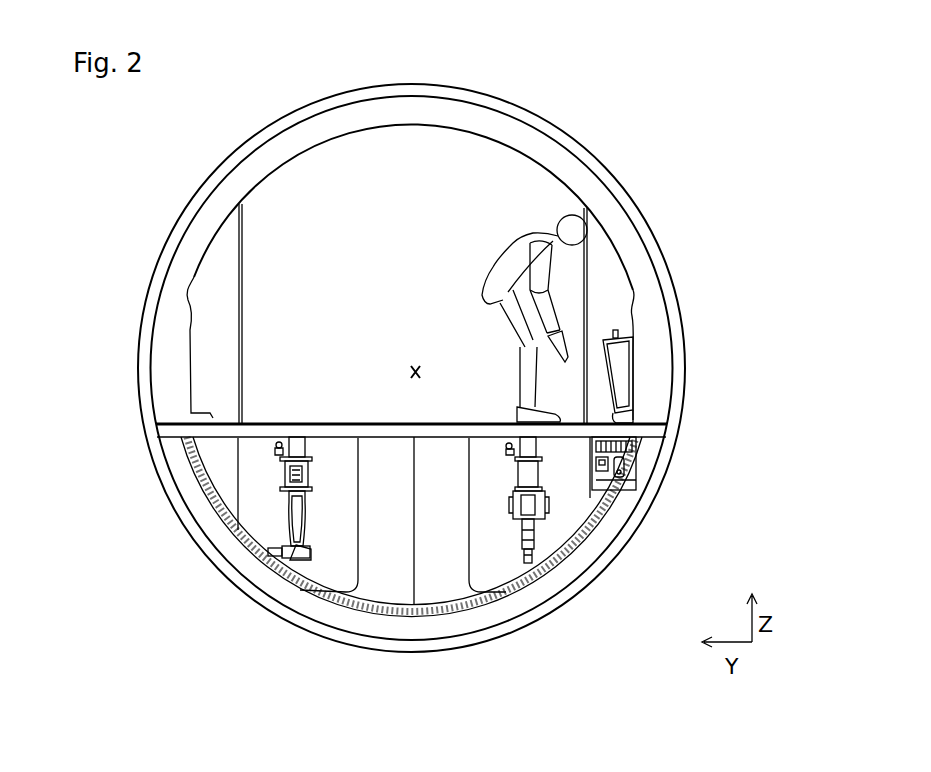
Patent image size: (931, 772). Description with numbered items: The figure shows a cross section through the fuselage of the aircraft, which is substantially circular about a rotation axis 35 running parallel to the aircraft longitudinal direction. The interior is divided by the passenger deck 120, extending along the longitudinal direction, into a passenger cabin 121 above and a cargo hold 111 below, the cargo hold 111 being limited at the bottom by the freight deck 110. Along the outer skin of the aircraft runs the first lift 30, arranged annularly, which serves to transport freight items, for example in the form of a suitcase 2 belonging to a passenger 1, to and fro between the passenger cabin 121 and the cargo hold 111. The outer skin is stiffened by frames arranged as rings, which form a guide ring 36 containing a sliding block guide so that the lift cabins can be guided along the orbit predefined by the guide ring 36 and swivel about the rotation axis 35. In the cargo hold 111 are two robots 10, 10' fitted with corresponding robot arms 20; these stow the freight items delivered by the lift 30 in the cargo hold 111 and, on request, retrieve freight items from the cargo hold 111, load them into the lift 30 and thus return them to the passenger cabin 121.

The passenger 1 is at (516, 276).
The suitcase 2 is at (627, 360).
The robot 10 is at (674, 443).
The robot 10' is at (187, 498).
The robot arm 20 is at (529, 563).
The first lift 30 is at (663, 383).
The rotation axis 35 is at (425, 371).
The first guide ring 36 is at (443, 122).
The freight deck 110 is at (415, 605).
The cargo hold 111 is at (403, 527).
The passenger deck 120 is at (303, 432).
The passenger cabin 121 is at (287, 295).